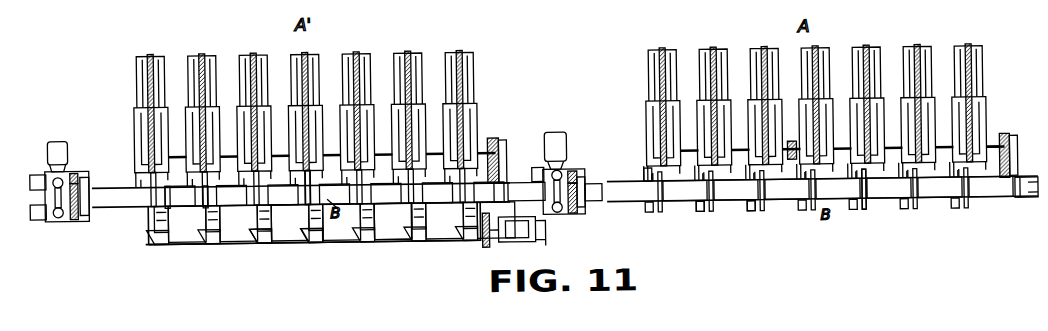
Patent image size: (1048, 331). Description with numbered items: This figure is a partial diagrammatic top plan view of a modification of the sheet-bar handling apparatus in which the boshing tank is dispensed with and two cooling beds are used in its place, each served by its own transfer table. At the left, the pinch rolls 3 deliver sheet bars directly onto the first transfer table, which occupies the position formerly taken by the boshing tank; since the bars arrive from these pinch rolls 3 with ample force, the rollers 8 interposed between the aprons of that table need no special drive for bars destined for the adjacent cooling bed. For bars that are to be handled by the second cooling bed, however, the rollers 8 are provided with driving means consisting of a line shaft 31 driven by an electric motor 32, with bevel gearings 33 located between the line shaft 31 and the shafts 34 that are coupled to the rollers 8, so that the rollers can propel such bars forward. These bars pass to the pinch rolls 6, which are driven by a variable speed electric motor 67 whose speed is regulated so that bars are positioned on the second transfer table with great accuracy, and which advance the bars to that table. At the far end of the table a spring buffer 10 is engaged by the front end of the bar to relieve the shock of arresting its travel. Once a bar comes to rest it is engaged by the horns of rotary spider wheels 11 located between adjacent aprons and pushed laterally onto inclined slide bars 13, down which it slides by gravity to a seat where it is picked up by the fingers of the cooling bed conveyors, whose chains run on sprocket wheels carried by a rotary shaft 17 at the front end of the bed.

The pinch rolls 3 is at (50, 205).
The rollers 8 is at (205, 204).
The shafts 34 is at (414, 220).
The bevel gearings 33 is at (318, 238).
The line shaft 31 is at (354, 238).
The electric motor 32 is at (514, 239).
The variable speed electric motor 67 is at (548, 144).
The pinch rolls 6 is at (566, 212).
The inclined slide bars 13 is at (648, 181).
The rotary spider wheels 11 is at (755, 212).
The spring buffer 10 is at (1022, 206).
The rotary shaft 17 is at (945, 150).